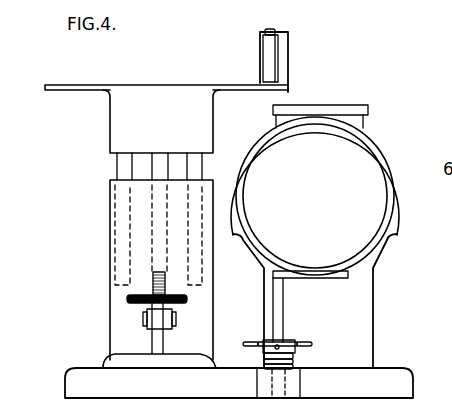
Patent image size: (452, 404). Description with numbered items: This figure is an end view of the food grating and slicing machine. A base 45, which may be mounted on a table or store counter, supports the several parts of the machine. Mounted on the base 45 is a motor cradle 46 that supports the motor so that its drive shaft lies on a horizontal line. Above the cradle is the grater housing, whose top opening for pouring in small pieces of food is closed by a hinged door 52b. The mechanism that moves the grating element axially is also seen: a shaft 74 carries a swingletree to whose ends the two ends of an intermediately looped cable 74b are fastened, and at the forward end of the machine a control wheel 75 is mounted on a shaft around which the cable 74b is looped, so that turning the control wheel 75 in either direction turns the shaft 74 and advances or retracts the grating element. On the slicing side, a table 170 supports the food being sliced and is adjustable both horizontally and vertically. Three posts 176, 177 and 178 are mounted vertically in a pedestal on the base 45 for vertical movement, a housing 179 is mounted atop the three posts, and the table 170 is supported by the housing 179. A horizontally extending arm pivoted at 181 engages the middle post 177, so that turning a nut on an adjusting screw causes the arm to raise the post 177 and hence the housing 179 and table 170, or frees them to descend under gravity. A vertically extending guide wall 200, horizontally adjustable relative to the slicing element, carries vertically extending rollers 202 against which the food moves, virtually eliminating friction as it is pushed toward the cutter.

The table 170 is at (88, 66).
The housing 179 is at (115, 135).
The middle post 177 is at (162, 160).
The post 178 is at (200, 165).
The post 176 is at (118, 170).
The pivot 181 is at (173, 318).
The base 45 is at (413, 388).
The motor cradle 46 is at (373, 329).
The hinged door 52b is at (325, 106).
The shaft 74 is at (283, 307).
The control wheel 75 is at (300, 341).
The cable 74b is at (297, 361).
The guide wall 200 is at (287, 60).
The rollers 202 is at (266, 68).